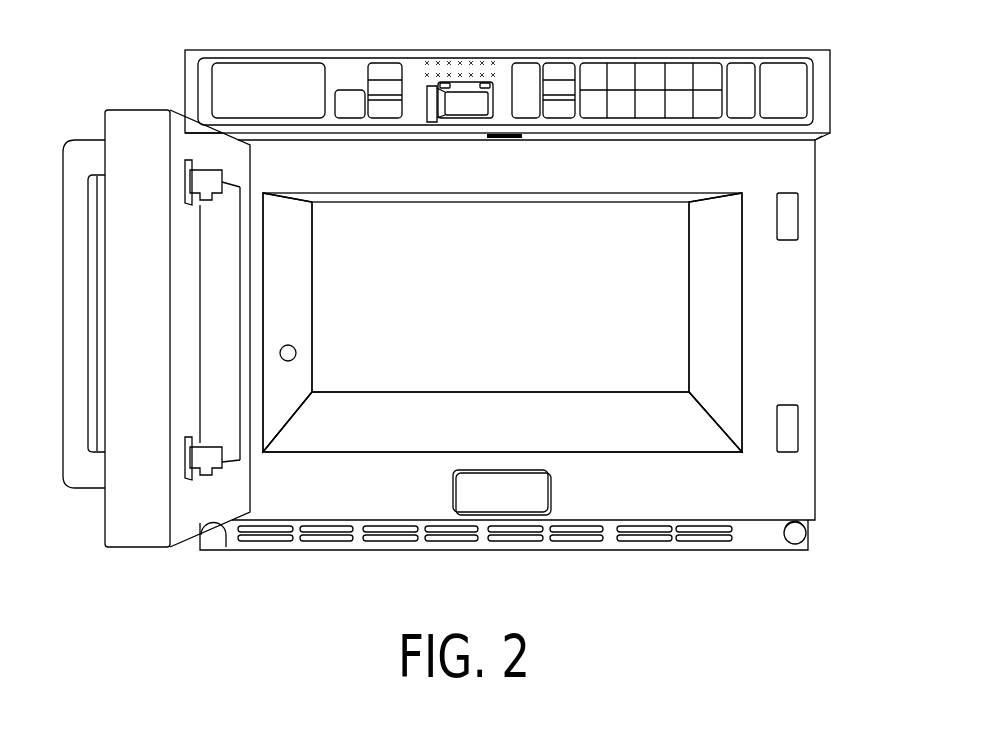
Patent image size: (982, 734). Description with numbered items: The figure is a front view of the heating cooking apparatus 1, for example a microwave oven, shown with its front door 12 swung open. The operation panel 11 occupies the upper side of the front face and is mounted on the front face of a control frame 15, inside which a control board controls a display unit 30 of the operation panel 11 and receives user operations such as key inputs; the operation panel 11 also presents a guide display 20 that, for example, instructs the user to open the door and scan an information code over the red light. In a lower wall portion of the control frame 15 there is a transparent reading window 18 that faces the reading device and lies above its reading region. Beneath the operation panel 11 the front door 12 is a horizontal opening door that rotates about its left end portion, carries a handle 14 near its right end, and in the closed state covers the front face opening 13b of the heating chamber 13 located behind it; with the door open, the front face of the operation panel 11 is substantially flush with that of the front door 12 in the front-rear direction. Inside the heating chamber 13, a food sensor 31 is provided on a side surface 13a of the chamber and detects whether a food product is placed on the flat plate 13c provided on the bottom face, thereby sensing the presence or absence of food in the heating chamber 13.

The heating cooking apparatus 1 is at (833, 49).
The operation panel 11 is at (832, 98).
The front door 12 is at (133, 110).
The heating chamber 13 is at (722, 286).
The side surface 13a is at (290, 240).
The front face opening 13b is at (635, 452).
The flat plate 13c is at (690, 421).
The handle 14 is at (90, 140).
The control frame 15 is at (818, 139).
The reading window 18 is at (515, 139).
The guide display 20 is at (506, 66).
The display unit 30 is at (288, 80).
The food sensor 31 is at (291, 361).